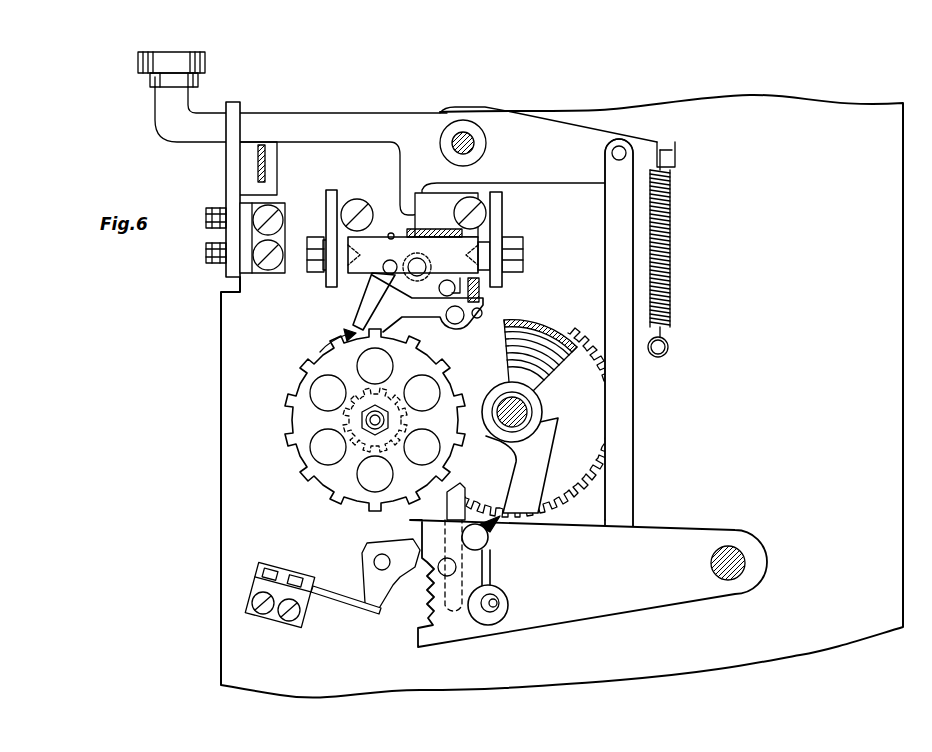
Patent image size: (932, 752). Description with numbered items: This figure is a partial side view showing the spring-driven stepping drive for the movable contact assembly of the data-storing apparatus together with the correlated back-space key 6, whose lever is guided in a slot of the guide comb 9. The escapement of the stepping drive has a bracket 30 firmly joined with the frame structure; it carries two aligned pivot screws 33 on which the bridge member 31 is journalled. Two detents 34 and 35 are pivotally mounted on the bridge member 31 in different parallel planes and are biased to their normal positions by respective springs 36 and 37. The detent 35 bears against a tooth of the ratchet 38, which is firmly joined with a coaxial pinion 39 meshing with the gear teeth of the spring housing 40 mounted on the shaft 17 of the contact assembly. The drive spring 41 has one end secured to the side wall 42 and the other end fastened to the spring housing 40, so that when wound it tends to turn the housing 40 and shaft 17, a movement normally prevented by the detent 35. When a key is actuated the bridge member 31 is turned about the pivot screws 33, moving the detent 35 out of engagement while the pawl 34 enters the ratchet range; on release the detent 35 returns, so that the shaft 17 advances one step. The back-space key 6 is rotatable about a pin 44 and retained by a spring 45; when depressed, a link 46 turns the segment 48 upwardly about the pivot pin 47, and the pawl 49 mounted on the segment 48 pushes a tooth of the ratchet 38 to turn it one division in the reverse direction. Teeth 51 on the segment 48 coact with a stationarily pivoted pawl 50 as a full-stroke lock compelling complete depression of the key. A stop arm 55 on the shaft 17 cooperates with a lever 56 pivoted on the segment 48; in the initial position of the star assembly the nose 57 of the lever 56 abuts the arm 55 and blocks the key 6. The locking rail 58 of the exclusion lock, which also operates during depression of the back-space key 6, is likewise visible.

The back-space key 6 is at (283, 130).
The guide comb 9 is at (233, 193).
The shaft 17 is at (525, 427).
The bracket 30 is at (497, 217).
The bridge member 31 is at (365, 250).
The pivot screws 33 is at (348, 257).
The pawl 34 is at (450, 300).
The detent 35 is at (355, 325).
The spring 36 is at (445, 233).
The spring 37 is at (480, 290).
The ratchet 38 is at (282, 401).
The pinion 39 is at (345, 422).
The spring housing 40 is at (583, 405).
The spring 41 is at (552, 388).
The side wall 42 is at (828, 617).
The pin 44 is at (463, 130).
The spring 45 is at (668, 288).
The link 46 is at (618, 242).
The pivot pin 47 is at (733, 565).
The segment 48 is at (657, 592).
The pawl 49 is at (447, 512).
The pawl 50 is at (410, 548).
The teeth 51 is at (422, 612).
The stop arm 55 is at (528, 492).
The lever 56 is at (472, 578).
The nose 57 is at (500, 532).
The locking rail 58 is at (258, 167).